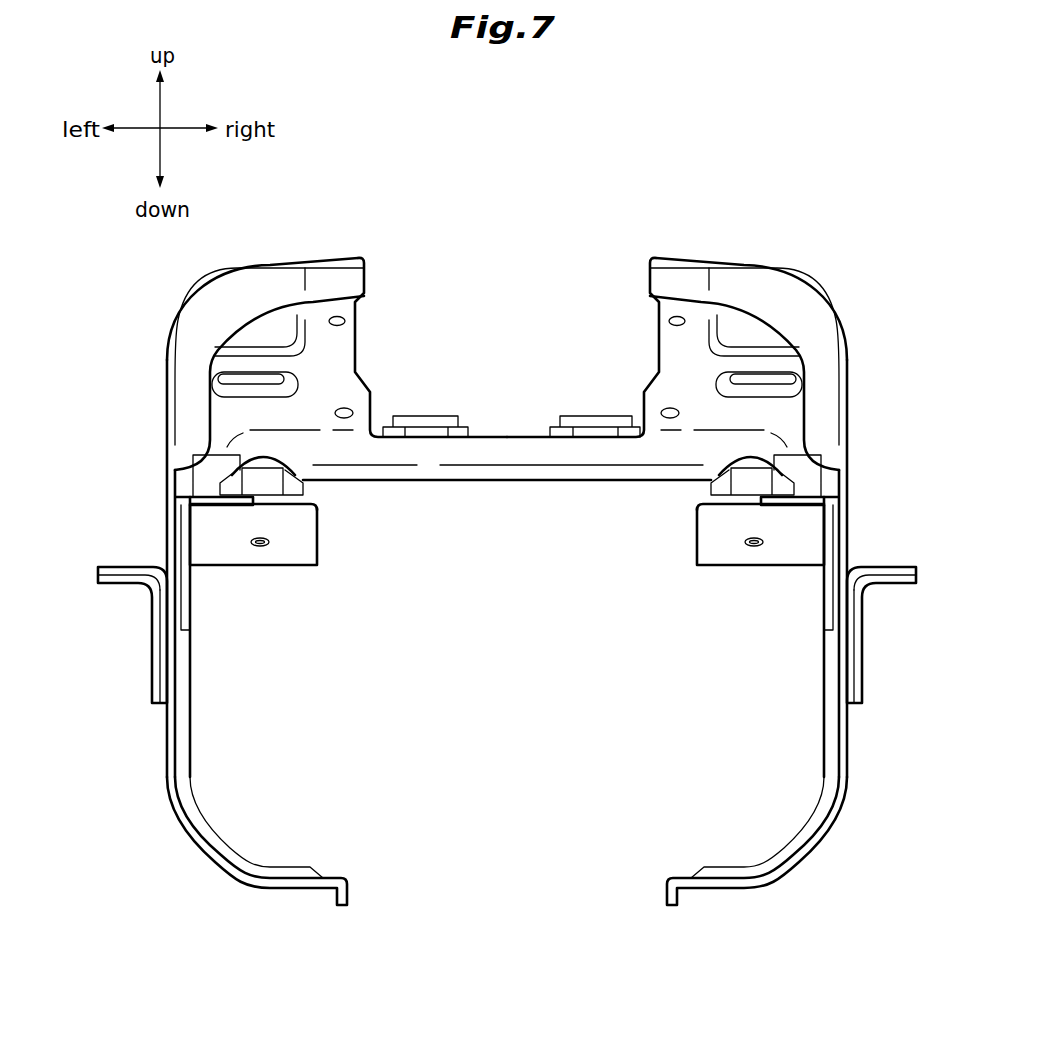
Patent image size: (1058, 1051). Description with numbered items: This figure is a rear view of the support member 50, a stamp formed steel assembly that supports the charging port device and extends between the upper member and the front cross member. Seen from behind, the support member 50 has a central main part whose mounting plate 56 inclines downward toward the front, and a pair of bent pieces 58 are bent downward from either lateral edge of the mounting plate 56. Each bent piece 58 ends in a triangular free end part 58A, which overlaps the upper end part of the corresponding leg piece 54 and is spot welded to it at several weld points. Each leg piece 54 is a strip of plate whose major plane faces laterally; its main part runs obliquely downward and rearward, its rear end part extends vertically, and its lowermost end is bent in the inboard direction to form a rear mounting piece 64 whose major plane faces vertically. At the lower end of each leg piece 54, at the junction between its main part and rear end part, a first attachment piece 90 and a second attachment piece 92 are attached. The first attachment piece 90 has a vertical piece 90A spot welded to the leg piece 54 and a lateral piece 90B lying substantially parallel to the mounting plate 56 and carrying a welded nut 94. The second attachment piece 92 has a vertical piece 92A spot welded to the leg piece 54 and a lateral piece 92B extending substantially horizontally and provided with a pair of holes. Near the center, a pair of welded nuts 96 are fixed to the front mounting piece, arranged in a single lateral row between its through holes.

The support member 50 is at (823, 314).
The leg piece 54 is at (168, 723).
The mounting plate 56 is at (345, 272).
The bent piece 58 is at (245, 298).
The free end part 58A is at (166, 520).
The rear mounting piece 64 is at (293, 883).
The first attachment piece 90 is at (297, 562).
The vertical piece 90A is at (183, 620).
The lateral piece 90B is at (305, 535).
The second attachment piece 92 is at (160, 648).
The vertical piece 92A is at (155, 697).
The lateral piece 92B is at (116, 572).
The welded nut 94 is at (270, 485).
The welded nut 96 is at (422, 433).